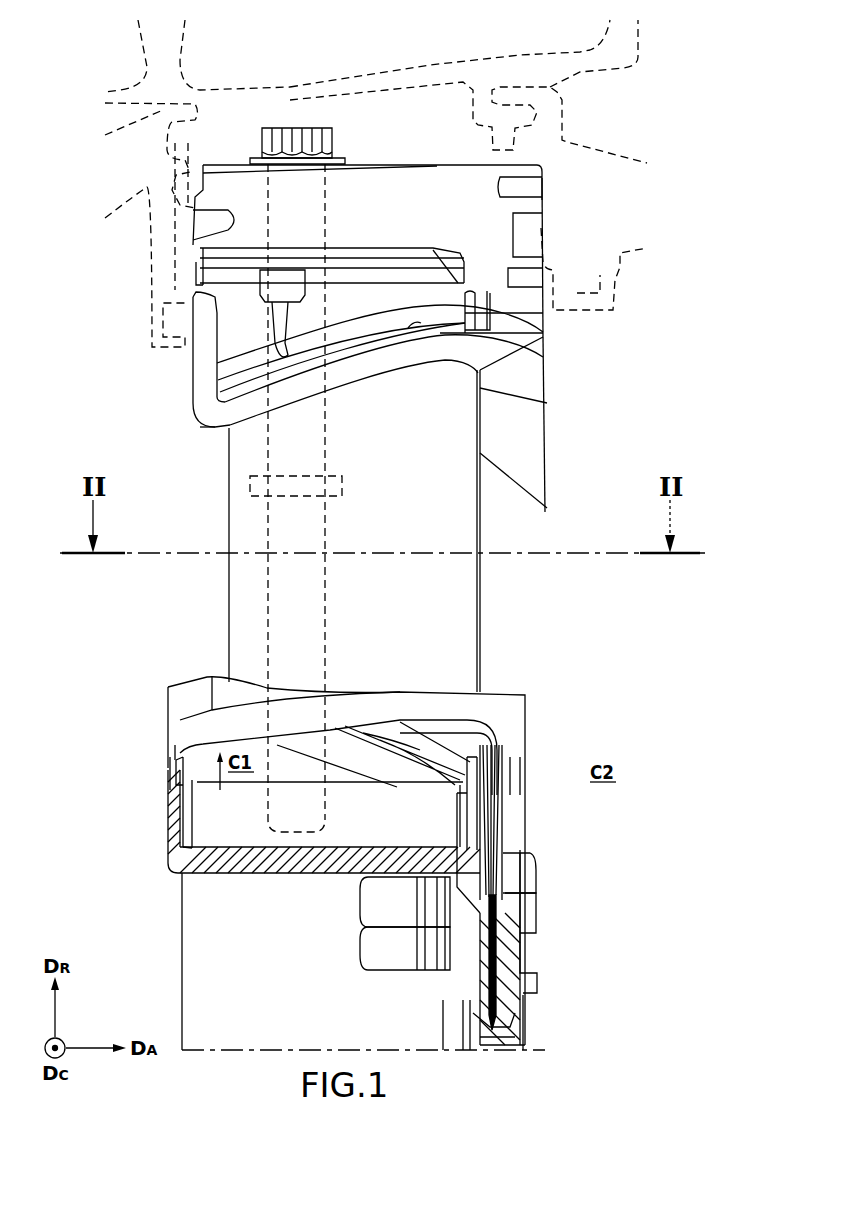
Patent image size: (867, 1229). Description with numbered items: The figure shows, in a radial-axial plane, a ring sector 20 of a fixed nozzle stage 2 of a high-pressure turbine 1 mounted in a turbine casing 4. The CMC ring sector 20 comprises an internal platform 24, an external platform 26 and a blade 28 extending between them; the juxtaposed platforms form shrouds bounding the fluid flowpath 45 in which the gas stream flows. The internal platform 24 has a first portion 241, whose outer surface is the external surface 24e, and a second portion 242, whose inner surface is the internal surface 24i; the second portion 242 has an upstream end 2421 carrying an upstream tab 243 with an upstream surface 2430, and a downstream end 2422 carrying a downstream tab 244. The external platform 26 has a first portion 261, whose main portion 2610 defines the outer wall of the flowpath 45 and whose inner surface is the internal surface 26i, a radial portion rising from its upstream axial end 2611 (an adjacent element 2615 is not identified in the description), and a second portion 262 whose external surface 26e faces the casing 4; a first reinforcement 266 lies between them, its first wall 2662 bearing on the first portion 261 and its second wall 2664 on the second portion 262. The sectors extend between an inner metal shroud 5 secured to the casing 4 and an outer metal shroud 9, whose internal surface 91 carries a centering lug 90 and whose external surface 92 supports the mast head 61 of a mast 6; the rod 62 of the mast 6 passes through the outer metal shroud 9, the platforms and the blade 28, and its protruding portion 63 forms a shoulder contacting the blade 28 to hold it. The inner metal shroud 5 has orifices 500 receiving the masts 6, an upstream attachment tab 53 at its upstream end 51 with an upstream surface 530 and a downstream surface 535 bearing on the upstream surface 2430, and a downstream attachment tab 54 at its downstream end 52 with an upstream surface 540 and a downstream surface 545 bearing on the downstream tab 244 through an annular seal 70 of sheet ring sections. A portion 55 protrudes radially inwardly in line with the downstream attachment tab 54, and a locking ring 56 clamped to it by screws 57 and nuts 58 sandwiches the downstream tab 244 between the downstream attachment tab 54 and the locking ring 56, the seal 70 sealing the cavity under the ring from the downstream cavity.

The high-pressure turbine 1 is at (96, 65).
The turbine casing 4 is at (520, 62).
The mast head 61 is at (322, 140).
The outer metal shroud 9 is at (433, 183).
The external surface 92 is at (445, 152).
The external surface 26e is at (340, 240).
The second portion 262 is at (205, 253).
The second wall 2664 is at (213, 263).
The first reinforcement 266 is at (225, 302).
The centering lug 90 is at (285, 275).
The internal surface 91 is at (470, 318).
The external platform 26 is at (532, 345).
The first wall 2662 is at (400, 333).
The main portion 2610 is at (363, 370).
The first portion 261 is at (500, 358).
The nozzle stage 2 is at (517, 532).
The fluid flowpath 45 is at (512, 607).
The outer ring hook 2615 is at (198, 357).
The upstream axial end 2611 is at (183, 411).
The internal surface 26i is at (294, 415).
The blade 28 is at (243, 504).
The ring sector 20 is at (242, 591).
The mast 6 is at (313, 602).
The rod 62 is at (313, 530).
The protruding portion 63 is at (342, 483).
The internal platform 24 is at (183, 700).
The external surface 24e is at (223, 690).
The first portion 241 is at (183, 737).
The second portion 242 is at (460, 727).
The downstream end 2422 is at (508, 725).
The downstream tab 244 is at (493, 745).
The upstream end 2421 is at (170, 748).
The upstream surface 2430 is at (182, 771).
The upstream tab 243 is at (172, 778).
The upstream surface 530 is at (163, 813).
The upstream attachment tab 53 is at (178, 824).
The upstream end 51 is at (162, 876).
The inner metal shroud 5 is at (280, 875).
The internal surface 24i is at (222, 784).
The downstream surface 535 is at (188, 828).
The orifices 500 is at (295, 786).
The downstream end 52 is at (440, 790).
The downstream attachment tab 54 is at (477, 807).
The upstream surface 540 is at (455, 837).
The downstream surface 545 is at (487, 830).
The protruding portion 55 is at (480, 1008).
The annular seal 70 is at (507, 1000).
The locking ring 56 is at (500, 912).
The screws 57 is at (520, 947).
The nuts 58 is at (440, 957).